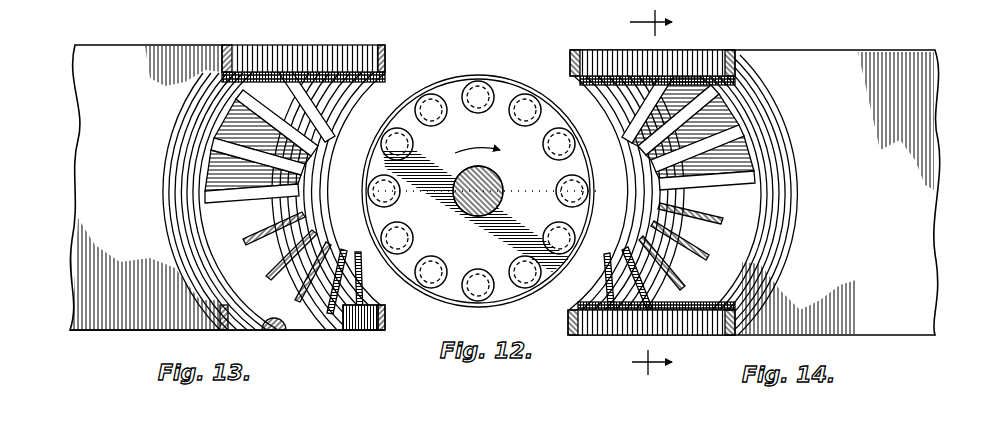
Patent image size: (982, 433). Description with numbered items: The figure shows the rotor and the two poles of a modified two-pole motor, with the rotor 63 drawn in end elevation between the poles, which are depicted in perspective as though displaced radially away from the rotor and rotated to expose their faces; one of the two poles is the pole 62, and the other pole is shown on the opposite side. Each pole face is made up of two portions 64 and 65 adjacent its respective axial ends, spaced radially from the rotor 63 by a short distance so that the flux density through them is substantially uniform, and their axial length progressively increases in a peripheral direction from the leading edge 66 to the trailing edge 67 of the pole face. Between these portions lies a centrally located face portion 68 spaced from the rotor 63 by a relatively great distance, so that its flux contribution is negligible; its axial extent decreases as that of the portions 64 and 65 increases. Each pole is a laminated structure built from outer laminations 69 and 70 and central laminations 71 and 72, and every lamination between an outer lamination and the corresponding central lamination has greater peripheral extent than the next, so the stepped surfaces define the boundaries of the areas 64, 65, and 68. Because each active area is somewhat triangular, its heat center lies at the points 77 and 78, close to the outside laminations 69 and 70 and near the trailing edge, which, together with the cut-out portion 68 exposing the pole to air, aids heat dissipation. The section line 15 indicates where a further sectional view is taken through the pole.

In FIG. 14, the section line 15- 15 is at (666, 195).
In FIG. 13, the pole 62 is at (92, 110).
In FIG. 14, the pole 62 is at (920, 160).
In FIG. 12, the rotor 63 is at (480, 72).
In FIG. 13, the pole face portion 64 is at (335, 109).
In FIG. 14, the pole face portion 64 is at (630, 262).
In FIG. 13, the pole face portion 65 is at (206, 130).
In FIG. 14, the pole face portion 65 is at (779, 229).
In FIG. 14, the leading edge 66 is at (568, 76).
In FIG. 14, the trailing edge 67 is at (568, 311).
In FIG. 13, the central face portion 68 is at (275, 322).
In FIG. 14, the central face portion 68 is at (704, 90).
In FIG. 13, the outer lamination 69 is at (167, 197).
In FIG. 14, the outer lamination 69 is at (790, 172).
In FIG. 13, the outer lamination 70 is at (323, 190).
In FIG. 14, the outer lamination 70 is at (630, 226).
In FIG. 13, the central lamination 71 is at (302, 46).
In FIG. 14, the central lamination 71 is at (655, 336).
In FIG. 13, the central lamination 72 is at (310, 48).
In FIG. 14, the central lamination 72 is at (650, 336).
In FIG. 14, the heat center 77 is at (632, 292).
In FIG. 14, the heat center 78 is at (752, 258).